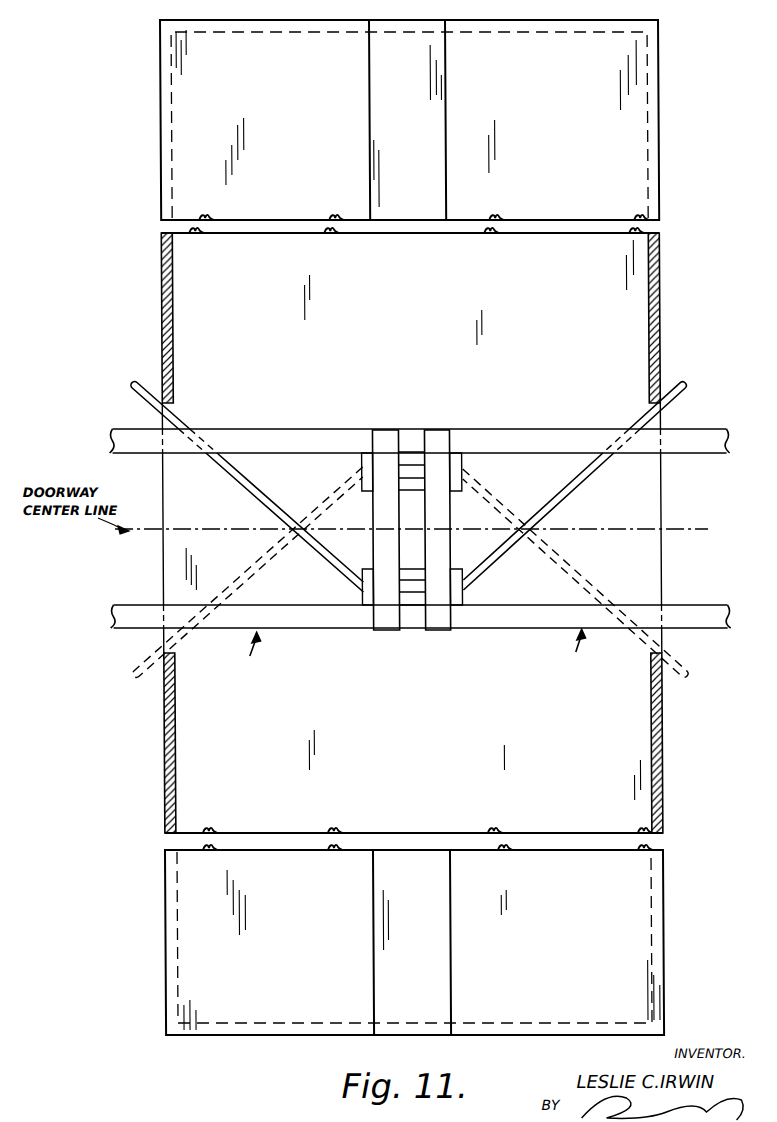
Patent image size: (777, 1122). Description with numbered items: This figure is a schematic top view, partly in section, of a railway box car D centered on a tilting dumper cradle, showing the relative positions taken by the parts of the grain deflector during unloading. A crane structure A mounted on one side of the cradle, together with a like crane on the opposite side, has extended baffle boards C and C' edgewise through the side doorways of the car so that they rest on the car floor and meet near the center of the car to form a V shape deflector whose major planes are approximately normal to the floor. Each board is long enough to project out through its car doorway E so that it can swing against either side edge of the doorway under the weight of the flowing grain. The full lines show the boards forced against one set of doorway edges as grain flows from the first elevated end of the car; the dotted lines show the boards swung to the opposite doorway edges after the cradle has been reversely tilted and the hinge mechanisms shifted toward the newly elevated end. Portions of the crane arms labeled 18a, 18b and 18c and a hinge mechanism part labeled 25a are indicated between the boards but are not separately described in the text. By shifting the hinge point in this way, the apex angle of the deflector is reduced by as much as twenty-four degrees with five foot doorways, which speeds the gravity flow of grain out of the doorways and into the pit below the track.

The upper horizontal header beam 18a is at (237, 437).
The lower horizontal beam 18b is at (131, 613).
The tie members between columns 18c is at (385, 548).
The vertical column members with brackets 25a is at (367, 454).
The baffle board C is at (247, 530).
The baffle board C' is at (575, 529).
The box car D is at (178, 233).
The car doorway E is at (163, 654).
The crane structure A is at (409, 656).